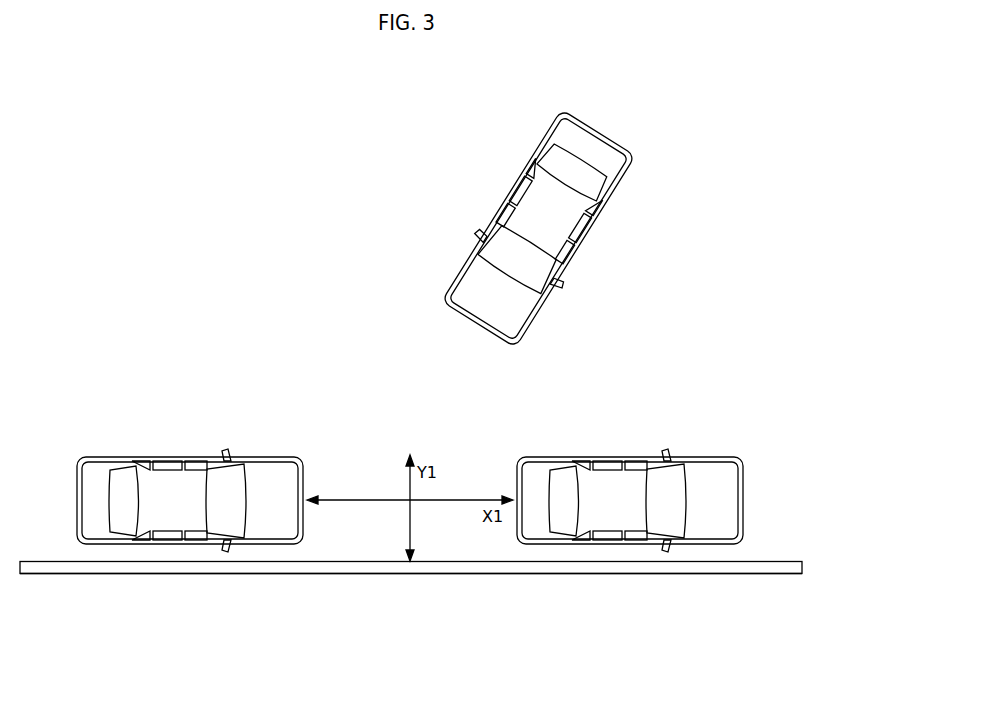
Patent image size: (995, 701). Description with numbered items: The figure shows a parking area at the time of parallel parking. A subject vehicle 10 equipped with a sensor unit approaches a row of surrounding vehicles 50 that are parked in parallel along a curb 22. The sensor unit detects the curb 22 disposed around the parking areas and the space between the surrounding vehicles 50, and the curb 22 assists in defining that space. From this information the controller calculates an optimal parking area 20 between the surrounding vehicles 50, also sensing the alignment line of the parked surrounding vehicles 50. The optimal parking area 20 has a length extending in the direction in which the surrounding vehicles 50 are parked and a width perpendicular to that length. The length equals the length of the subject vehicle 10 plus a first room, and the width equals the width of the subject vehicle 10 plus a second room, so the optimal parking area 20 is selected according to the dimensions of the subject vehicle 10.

The subject vehicle 10 is at (553, 215).
The optimal parking area 20 is at (342, 550).
The curb 22 is at (228, 568).
The surrounding vehicles 50 is at (613, 477).